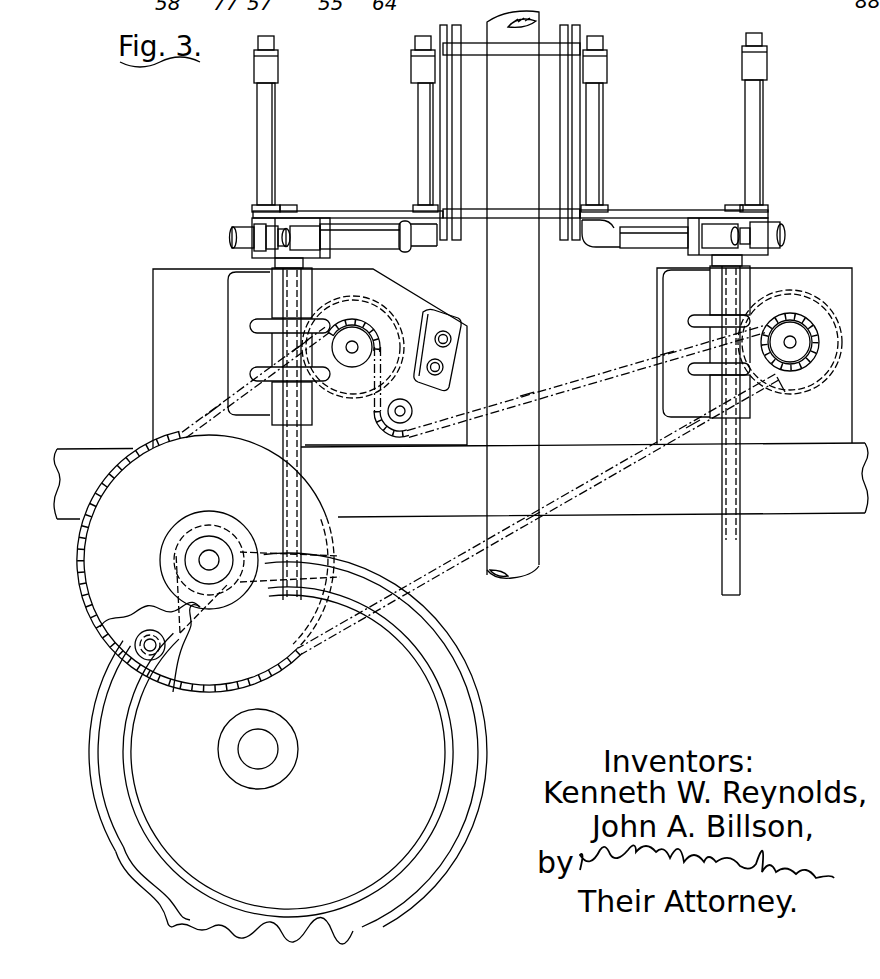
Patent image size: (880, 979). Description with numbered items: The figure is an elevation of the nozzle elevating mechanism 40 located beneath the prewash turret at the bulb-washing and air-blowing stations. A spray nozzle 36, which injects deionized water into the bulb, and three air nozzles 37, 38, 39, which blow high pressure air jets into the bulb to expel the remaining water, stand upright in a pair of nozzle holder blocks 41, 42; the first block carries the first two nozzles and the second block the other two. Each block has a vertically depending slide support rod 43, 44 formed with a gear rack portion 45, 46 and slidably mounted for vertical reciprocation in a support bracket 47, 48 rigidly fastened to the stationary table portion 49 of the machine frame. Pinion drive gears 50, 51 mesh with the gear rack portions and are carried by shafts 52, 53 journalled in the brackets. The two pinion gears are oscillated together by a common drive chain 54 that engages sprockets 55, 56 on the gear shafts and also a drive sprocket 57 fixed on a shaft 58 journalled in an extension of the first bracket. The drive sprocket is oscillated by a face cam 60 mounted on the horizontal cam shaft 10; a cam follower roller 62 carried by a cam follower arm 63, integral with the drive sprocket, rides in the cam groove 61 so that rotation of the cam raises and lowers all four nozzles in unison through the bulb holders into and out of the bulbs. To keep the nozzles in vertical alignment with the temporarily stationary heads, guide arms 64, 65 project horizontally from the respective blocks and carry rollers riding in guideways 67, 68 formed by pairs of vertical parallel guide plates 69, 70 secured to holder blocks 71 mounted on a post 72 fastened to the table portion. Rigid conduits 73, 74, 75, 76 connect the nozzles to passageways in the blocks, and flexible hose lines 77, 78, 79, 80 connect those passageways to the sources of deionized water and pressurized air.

The cam shaft 10 is at (273, 754).
The spray nozzle 36 is at (275, 44).
The air nozzle 37 is at (412, 43).
The air nozzle 38 is at (606, 32).
The air nozzle 39 is at (763, 33).
The elevating mechanism 40 is at (356, 538).
The nozzle holder block 41 is at (255, 252).
The nozzle holder block 42 is at (760, 255).
The slide support rod 43 is at (303, 450).
The slide support rod 44 is at (727, 548).
The gear rack portion 45 is at (307, 430).
The gear rack portion 46 is at (740, 423).
The support bracket 47 is at (240, 310).
The support bracket 48 is at (668, 303).
The stationary table portion 49 is at (638, 505).
The pinion drive gear 50 is at (312, 312).
The pinion drive gear 51 is at (753, 307).
The gear shaft 52 is at (356, 343).
The gear shaft 53 is at (793, 337).
The drive chain 54 is at (192, 416).
The sprocket 55 is at (374, 383).
The sprocket 56 is at (782, 383).
The drive sprocket 57 is at (212, 407).
The shaft 58 is at (210, 557).
The face cam 60 is at (458, 644).
The cam groove 61 is at (118, 685).
The cam follower roller 62 is at (183, 635).
The cam follower arm 63 is at (137, 627).
The guide arm 64 is at (377, 212).
The guide arm 65 is at (663, 210).
The guideway 67 is at (438, 121).
The guideway 68 is at (565, 125).
The guide plates 69 is at (450, 23).
The guide plates 70 is at (567, 23).
The holder blocks 71 is at (512, 50).
The post 72 is at (522, 292).
The conduit 73 is at (263, 123).
The conduit 74 is at (417, 100).
The conduit 75 is at (601, 97).
The conduit 76 is at (758, 102).
The hose line 77 is at (247, 227).
The hose line 78 is at (290, 228).
The hose line 79 is at (730, 227).
The hose line 80 is at (779, 227).